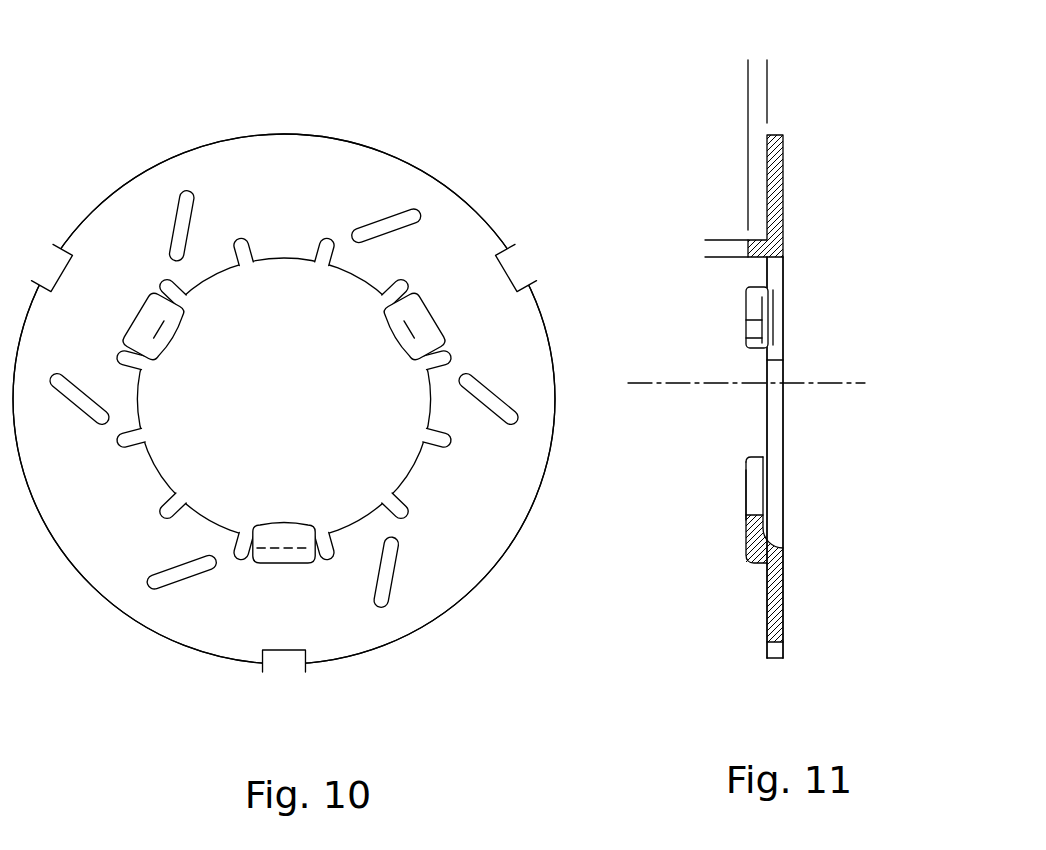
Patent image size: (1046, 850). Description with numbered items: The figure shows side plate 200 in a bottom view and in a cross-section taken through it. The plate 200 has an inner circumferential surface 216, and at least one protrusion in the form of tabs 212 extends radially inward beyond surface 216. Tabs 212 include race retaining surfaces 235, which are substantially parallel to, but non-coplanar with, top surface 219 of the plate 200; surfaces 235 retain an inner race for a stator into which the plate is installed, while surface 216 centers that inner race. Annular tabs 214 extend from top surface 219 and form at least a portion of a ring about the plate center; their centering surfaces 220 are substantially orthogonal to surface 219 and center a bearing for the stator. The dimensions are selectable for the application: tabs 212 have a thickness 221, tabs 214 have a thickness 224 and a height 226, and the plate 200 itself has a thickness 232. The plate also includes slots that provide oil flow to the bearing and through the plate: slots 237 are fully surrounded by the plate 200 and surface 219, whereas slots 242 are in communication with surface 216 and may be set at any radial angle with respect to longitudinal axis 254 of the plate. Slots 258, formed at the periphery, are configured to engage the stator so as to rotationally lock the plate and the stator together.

In FIG. 10, the side plate 200 is at (185, 100).
In FIG. 11, the side plate 200 is at (687, 124).
In FIG. 10, the tabs 212 is at (270, 525).
In FIG. 11, the tabs 212 is at (743, 468).
In FIG. 11, the annular tabs 214 is at (783, 238).
In FIG. 10, the inner circumferential surface 216 is at (368, 517).
In FIG. 11, the top surface 219 is at (767, 603).
In FIG. 10, the centering surfaces 220 is at (457, 538).
In FIG. 11, the thickness 221 is at (813, 496).
In FIG. 11, the thickness 224 is at (712, 303).
In FIG. 11, the height 226 is at (698, 73).
In FIG. 11, the thickness 232 is at (720, 399).
In FIG. 11, the race retaining surfaces 235 is at (763, 477).
In FIG. 10, the slots 237 is at (390, 227).
In FIG. 10, the slots 242 is at (133, 358).
In FIG. 11, the longitudinal axis 254 is at (700, 383).
In FIG. 10, the slots 258 is at (507, 267).